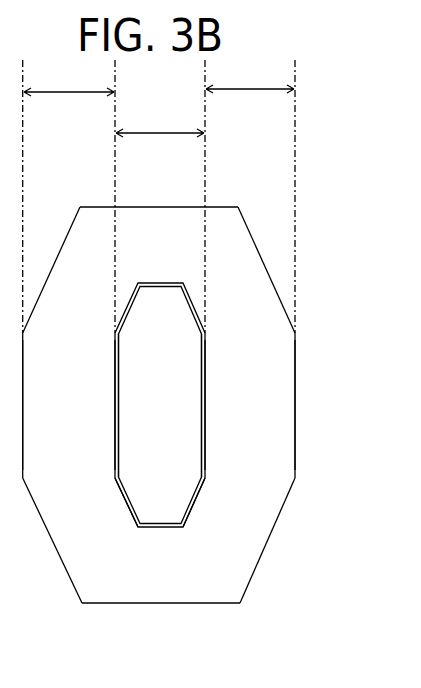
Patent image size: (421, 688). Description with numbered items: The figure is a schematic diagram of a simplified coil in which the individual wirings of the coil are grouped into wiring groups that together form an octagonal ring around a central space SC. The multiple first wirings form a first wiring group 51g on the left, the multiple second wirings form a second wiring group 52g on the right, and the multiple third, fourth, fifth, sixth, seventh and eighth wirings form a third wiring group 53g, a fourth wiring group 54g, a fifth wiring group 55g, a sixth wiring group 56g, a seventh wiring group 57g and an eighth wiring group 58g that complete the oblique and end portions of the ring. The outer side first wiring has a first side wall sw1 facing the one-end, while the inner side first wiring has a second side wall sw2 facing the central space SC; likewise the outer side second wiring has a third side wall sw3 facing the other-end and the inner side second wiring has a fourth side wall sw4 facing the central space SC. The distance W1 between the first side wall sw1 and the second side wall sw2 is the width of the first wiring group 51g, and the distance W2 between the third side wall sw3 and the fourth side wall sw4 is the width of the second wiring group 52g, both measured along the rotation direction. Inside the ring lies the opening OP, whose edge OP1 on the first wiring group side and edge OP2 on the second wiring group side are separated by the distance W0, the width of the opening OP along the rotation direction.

The distance W1 is at (69, 76).
The distance W2 is at (250, 74).
The distance W0 is at (160, 118).
The seventh wiring group 57g is at (150, 252).
The third wiring group 53g is at (77, 255).
The fifth wiring group 55g is at (237, 307).
The first side wall sw1 is at (22, 353).
The third side wall sw3 is at (297, 370).
The first wiring group 51g is at (82, 390).
The second wiring group 52g is at (260, 397).
The fourth wiring group 54g is at (68, 522).
The sixth wiring group 56g is at (255, 527).
The eighth wiring group 58g is at (155, 587).
The opening OP is at (197, 494).
The edge OP1 is at (118, 460).
The edge OP2 is at (203, 412).
The second side wall sw2 is at (118, 440).
The fourth side wall sw4 is at (202, 392).
The central space SC is at (207, 488).